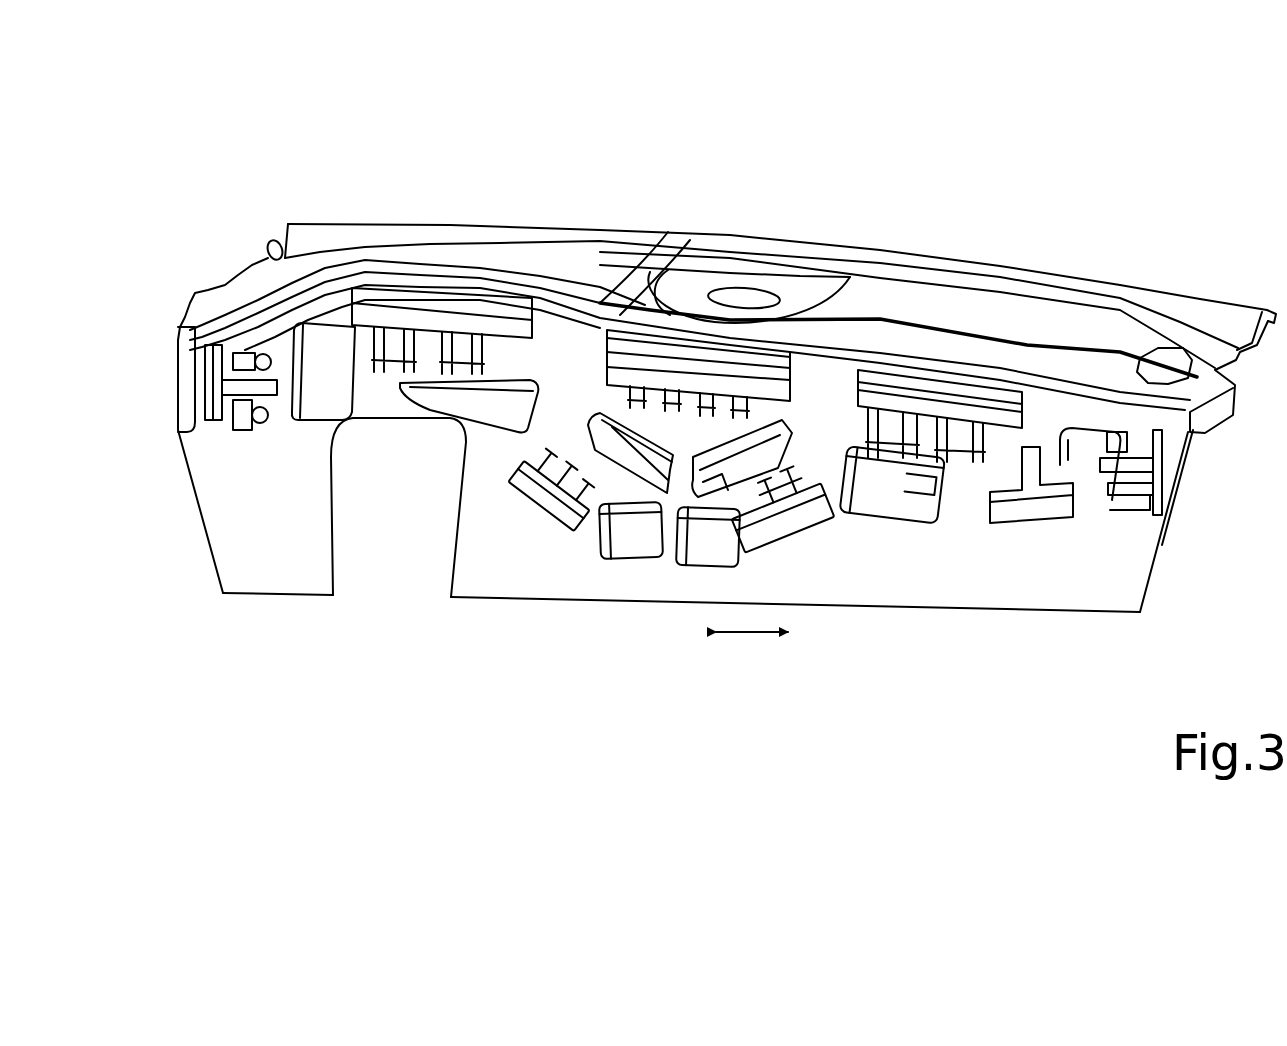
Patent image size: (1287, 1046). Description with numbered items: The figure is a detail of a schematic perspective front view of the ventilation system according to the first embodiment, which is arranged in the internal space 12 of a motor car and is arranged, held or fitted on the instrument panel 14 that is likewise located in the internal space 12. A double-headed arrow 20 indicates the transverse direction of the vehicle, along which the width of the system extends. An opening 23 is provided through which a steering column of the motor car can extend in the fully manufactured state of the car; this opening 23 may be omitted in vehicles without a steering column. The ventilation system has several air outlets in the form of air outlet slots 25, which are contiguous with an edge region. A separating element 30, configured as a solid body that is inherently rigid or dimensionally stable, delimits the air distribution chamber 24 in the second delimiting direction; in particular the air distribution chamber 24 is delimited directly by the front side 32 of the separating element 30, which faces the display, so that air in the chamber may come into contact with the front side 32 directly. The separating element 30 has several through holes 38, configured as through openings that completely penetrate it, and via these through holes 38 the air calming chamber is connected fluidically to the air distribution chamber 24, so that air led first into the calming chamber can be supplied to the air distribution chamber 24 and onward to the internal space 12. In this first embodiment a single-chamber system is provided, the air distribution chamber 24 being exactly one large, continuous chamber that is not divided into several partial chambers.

The internal space 12 is at (1233, 518).
The instrument panel 14 is at (754, 230).
The double-headed arrow 20 is at (755, 634).
The opening 23 is at (405, 530).
The air distribution chamber 24 is at (1043, 428).
The air outlet slots 25 is at (212, 378).
The separating element 30 is at (818, 398).
The front side 32 is at (1130, 576).
The through holes 38 is at (324, 362).